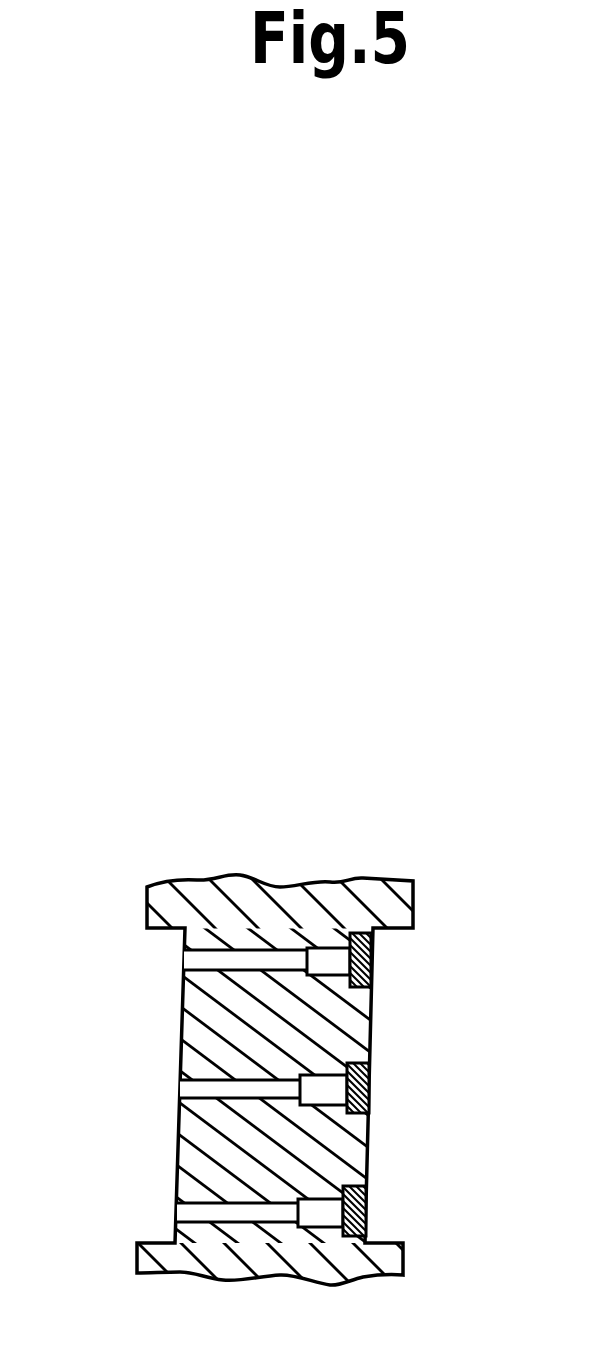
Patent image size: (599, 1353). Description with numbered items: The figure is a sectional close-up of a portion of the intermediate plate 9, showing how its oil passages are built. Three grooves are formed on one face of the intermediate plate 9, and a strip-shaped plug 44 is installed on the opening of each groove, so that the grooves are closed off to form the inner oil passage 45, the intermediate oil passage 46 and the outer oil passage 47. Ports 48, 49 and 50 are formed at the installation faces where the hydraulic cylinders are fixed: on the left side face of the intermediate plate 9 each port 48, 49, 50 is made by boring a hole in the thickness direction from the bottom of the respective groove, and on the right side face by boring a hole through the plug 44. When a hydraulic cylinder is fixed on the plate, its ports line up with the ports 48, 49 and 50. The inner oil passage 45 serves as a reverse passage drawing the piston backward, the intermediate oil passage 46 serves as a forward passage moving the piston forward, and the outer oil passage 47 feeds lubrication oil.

The intermediate plate 9 is at (186, 892).
The strip-shaped plug 44 is at (362, 935).
The inner oil passage 45 is at (312, 1215).
The intermediate oil passage 46 is at (320, 1087).
The outer oil passage 47 is at (312, 947).
The port 48 is at (200, 1214).
The port 49 is at (202, 1092).
The port 50 is at (200, 962).